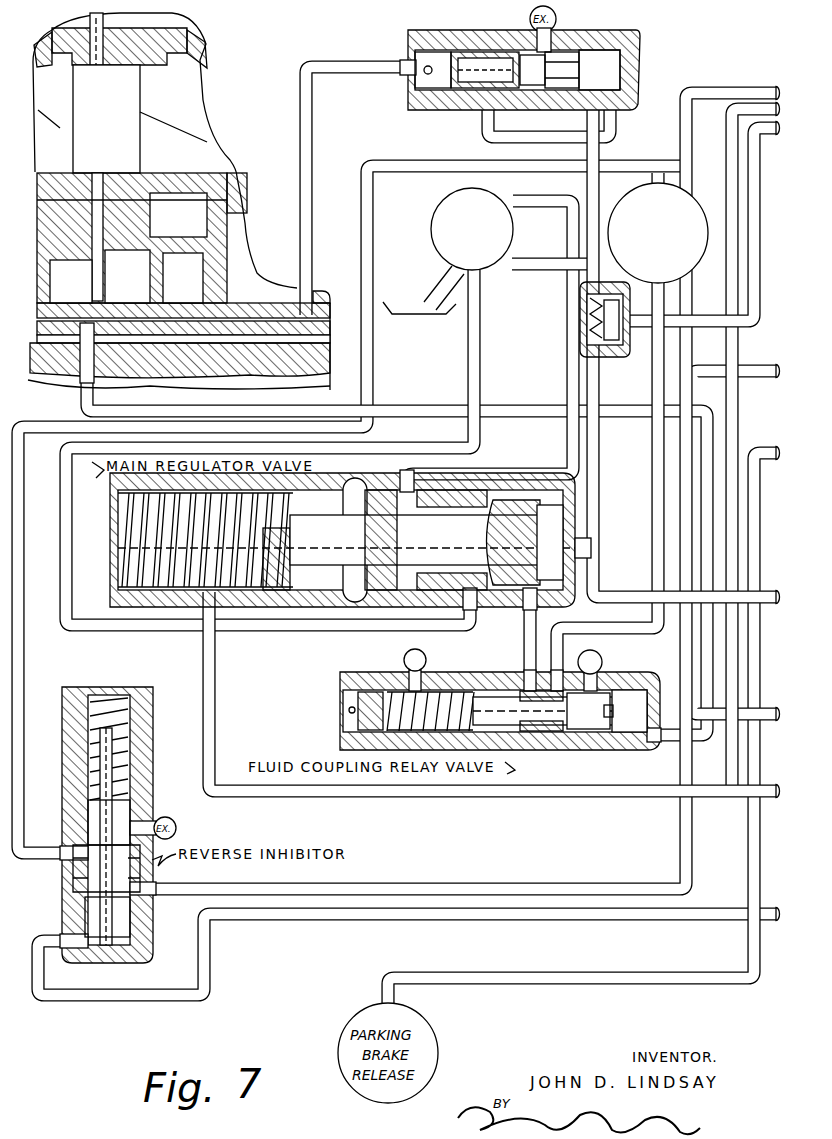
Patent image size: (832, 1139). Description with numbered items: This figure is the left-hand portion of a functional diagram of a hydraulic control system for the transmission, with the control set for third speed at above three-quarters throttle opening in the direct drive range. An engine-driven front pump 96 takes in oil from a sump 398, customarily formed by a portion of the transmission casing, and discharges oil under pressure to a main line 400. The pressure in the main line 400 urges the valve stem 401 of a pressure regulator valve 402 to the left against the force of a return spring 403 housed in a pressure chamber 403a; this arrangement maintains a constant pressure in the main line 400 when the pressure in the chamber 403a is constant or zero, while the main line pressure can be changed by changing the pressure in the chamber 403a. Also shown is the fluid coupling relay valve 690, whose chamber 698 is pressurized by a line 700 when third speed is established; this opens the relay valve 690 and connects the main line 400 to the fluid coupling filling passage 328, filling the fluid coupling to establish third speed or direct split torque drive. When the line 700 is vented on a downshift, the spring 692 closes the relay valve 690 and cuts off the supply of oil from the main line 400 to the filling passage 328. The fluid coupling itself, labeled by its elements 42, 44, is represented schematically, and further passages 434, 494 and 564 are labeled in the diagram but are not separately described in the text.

The front pump 96 is at (442, 205).
The sump 398 is at (425, 320).
The main line 400 is at (535, 271).
The passage 494 is at (530, 410).
The fluid coupling impeller 44 is at (636, 203).
The fluid coupling turbine 42 is at (678, 210).
The line 700 is at (736, 110).
The passage 434 is at (750, 322).
The fluid coupling filling passage 328 is at (654, 503).
The pressure regulator valve 402 is at (113, 520).
The return spring 403 is at (125, 548).
The pressure chamber 403a is at (136, 578).
The valve stem 401 is at (468, 562).
The passage 564 is at (216, 672).
The spring 692 is at (400, 690).
The fluid coupling relay valve 690 is at (338, 740).
The chamber 698 is at (620, 742).